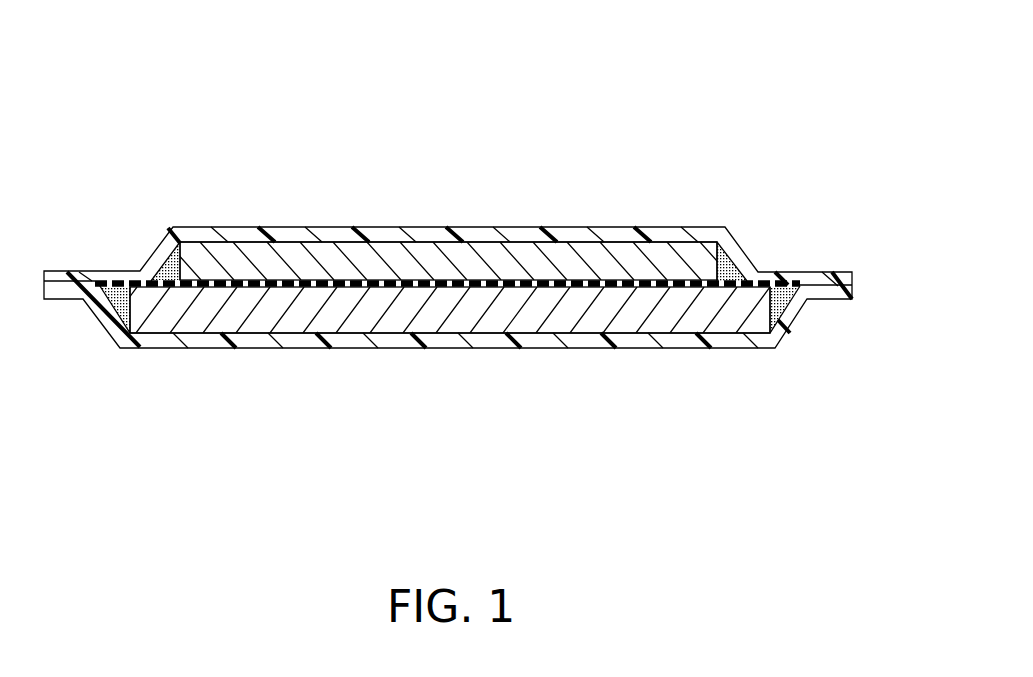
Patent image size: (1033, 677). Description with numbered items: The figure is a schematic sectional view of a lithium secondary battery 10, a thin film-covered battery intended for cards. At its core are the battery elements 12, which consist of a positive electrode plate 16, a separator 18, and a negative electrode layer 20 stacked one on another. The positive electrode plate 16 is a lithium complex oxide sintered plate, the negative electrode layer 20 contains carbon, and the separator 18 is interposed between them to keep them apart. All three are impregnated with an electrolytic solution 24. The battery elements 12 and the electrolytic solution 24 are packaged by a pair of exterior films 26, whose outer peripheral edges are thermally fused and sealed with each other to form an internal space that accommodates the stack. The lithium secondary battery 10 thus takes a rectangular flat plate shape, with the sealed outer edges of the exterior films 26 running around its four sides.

The lithium secondary battery 10 is at (786, 67).
The battery elements 12 is at (630, 140).
The positive electrode plate 16 is at (457, 252).
The separator 18 is at (537, 280).
The negative electrode layer 20 is at (613, 300).
The electrolytic solution 24 is at (167, 251).
The exterior films 26 is at (262, 228).